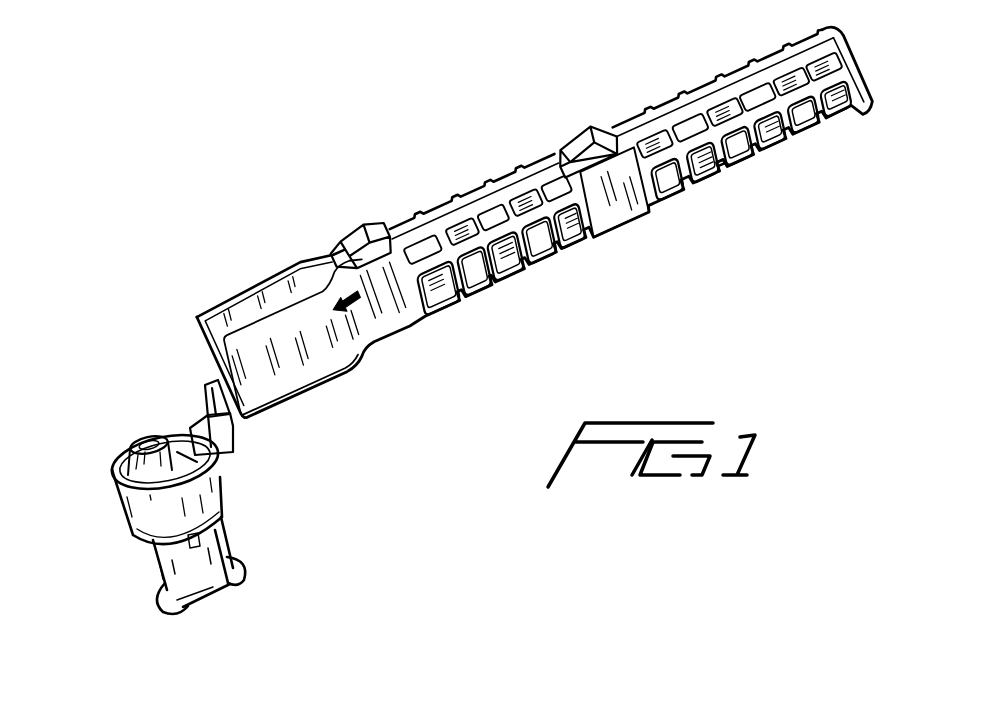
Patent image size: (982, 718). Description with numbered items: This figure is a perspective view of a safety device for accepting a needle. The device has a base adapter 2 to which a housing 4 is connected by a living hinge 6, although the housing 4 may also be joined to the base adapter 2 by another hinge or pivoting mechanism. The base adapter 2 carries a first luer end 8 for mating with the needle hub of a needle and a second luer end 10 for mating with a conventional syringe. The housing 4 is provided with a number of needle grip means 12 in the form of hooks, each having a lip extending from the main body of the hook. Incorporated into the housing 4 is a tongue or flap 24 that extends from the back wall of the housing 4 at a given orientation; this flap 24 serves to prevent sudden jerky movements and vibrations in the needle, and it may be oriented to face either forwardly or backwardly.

The base adapter 2 is at (230, 493).
The housing 4 is at (543, 252).
The living hinge 6 is at (234, 426).
The first luer end 8 is at (122, 455).
The second luer end 10 is at (172, 607).
The needle grip means 12 is at (357, 240).
The flap 24 is at (737, 163).